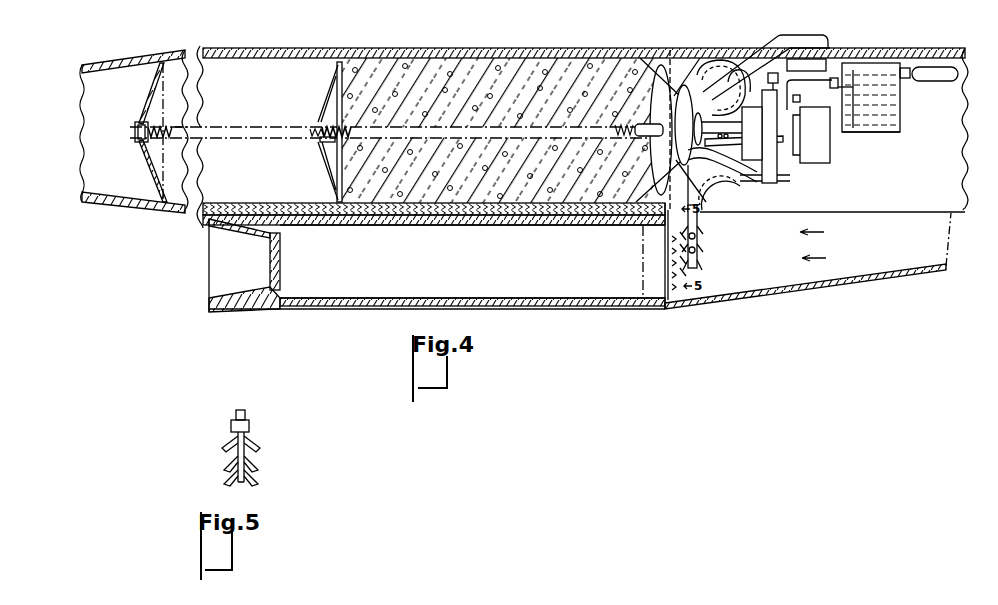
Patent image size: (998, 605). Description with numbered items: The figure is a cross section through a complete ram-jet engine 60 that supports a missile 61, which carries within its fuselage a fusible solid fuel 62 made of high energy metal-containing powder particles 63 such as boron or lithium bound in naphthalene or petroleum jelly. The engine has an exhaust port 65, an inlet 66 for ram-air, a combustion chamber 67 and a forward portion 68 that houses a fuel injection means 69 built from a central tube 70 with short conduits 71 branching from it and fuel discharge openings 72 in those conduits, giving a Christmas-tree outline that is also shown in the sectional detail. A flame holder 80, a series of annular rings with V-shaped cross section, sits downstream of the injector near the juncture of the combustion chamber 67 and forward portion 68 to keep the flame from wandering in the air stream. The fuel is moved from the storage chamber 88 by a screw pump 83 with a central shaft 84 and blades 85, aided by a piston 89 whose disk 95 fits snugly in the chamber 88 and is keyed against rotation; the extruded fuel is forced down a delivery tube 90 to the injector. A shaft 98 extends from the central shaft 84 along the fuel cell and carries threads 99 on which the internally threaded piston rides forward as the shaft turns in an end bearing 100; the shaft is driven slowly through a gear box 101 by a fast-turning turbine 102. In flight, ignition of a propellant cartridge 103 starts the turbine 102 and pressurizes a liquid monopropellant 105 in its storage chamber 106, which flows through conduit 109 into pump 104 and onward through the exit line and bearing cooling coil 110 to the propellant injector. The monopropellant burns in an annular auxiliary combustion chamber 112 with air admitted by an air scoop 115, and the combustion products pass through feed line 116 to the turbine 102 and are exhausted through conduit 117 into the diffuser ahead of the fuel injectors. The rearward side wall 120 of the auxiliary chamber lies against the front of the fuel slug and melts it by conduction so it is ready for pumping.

In FIG. 4, the ram-jet engine 60 is at (587, 311).
In FIG. 4, the missile 61 is at (568, 50).
In FIG. 4, the fuel 62 is at (433, 52).
In FIG. 4, the metal-containing powder particles 63 is at (456, 100).
In FIG. 4, the exhaust port 65 is at (209, 280).
In FIG. 4, the inlet 66 is at (950, 248).
In FIG. 4, the combustion chamber 67 is at (472, 256).
In FIG. 4, the forward portion 68 is at (745, 292).
In FIG. 4, the fuel injection means 69 is at (700, 218).
In FIG. 5, the fuel injection means 69 is at (245, 412).
In FIG. 4, the central tube 70 is at (700, 252).
In FIG. 5, the central tube 70 is at (249, 429).
In FIG. 5, the short conduits 71 is at (230, 446).
In FIG. 5, the fuel discharge openings 72 is at (256, 464).
In FIG. 4, the flame holder 80 is at (666, 258).
In FIG. 4, the screw pump 83 is at (664, 62).
In FIG. 4, the central shaft 84 is at (658, 125).
In FIG. 4, the blades 85 is at (650, 62).
In FIG. 4, the storage chamber 88 is at (480, 58).
In FIG. 4, the piston 89 is at (322, 108).
In FIG. 4, the delivery tube 90 is at (664, 227).
In FIG. 4, the disk 95 is at (337, 96).
In FIG. 4, the shaft 98 is at (270, 142).
In FIG. 4, the threads 99 is at (320, 143).
In FIG. 4, the end bearing 100 is at (135, 133).
In FIG. 4, the gear box 101 is at (770, 162).
In FIG. 4, the turbine 102 is at (752, 152).
In FIG. 4, the propellant cartridge 103 is at (805, 73).
In FIG. 4, the pump 104 is at (830, 150).
In FIG. 4, the liquid monopropellant 105 is at (900, 100).
In FIG. 4, the storage chamber 106 is at (884, 131).
In FIG. 4, the conduit 109 is at (802, 90).
In FIG. 4, the exit line and bearing cooling coil 110 is at (733, 141).
In FIG. 4, the auxiliary combustion chamber 112 is at (705, 62).
In FIG. 4, the air scoop 115 is at (836, 40).
In FIG. 4, the feed line 116 is at (765, 185).
In FIG. 4, the conduit 117 is at (791, 245).
In FIG. 4, the rearward side wall 120 is at (688, 60).